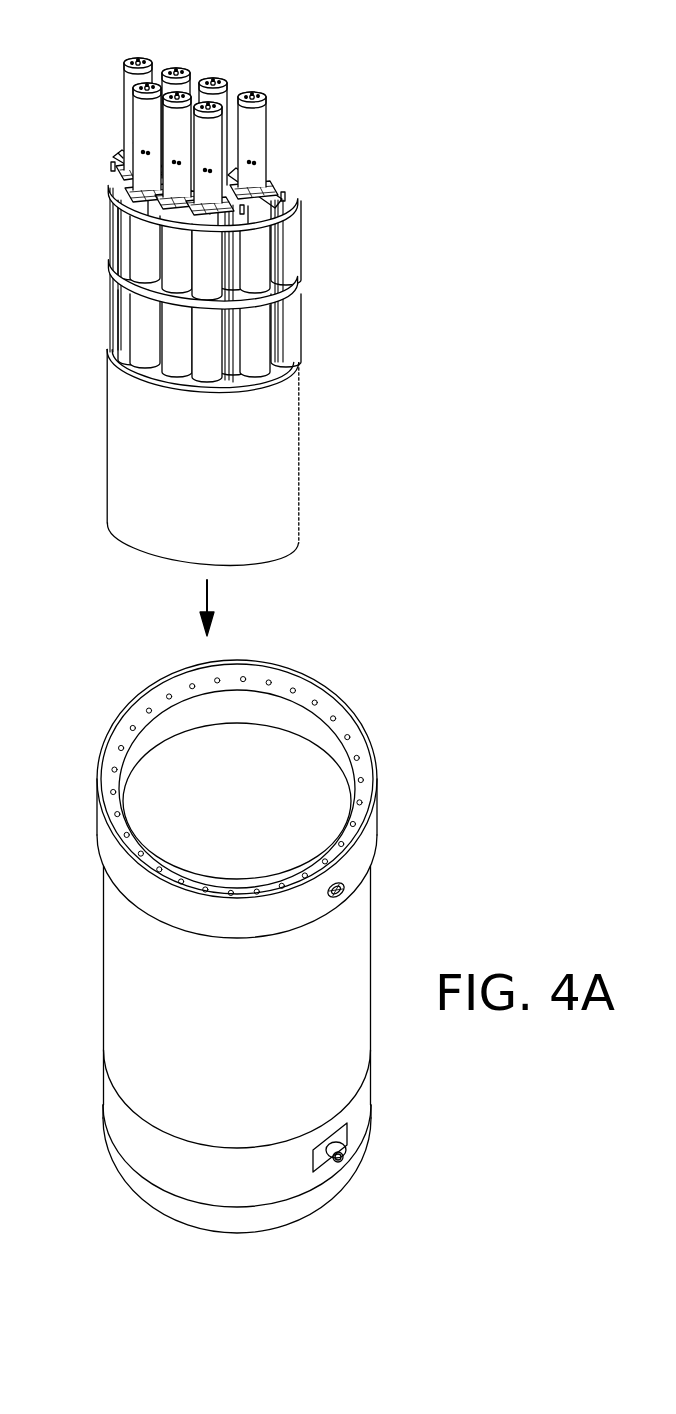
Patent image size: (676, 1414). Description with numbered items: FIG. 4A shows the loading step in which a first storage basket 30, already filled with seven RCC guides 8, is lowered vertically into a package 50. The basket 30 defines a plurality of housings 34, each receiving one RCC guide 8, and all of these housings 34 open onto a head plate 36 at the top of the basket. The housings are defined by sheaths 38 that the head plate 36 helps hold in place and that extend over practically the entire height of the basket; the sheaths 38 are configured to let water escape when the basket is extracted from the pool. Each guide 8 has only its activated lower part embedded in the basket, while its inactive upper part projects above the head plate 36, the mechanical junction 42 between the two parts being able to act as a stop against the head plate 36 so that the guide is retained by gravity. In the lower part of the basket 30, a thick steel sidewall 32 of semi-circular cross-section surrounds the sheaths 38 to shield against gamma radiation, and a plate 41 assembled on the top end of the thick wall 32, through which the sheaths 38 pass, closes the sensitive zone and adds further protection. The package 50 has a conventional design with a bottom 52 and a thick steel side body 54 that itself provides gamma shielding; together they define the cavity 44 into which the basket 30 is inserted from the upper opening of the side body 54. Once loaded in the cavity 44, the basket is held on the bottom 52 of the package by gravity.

The RCC guide 8 is at (182, 62).
The storage basket 30 is at (183, 308).
The thick sidewall 32 is at (258, 523).
The housing 34 is at (113, 167).
The head plate 36 is at (297, 205).
The sheath 38 is at (205, 343).
The plate closing the sensitive zone 41 is at (274, 366).
The mechanical junction 42 is at (283, 192).
The cavity 44 is at (277, 747).
The package 50 is at (244, 953).
The bottom 52 is at (195, 1217).
The side body 54 is at (123, 947).